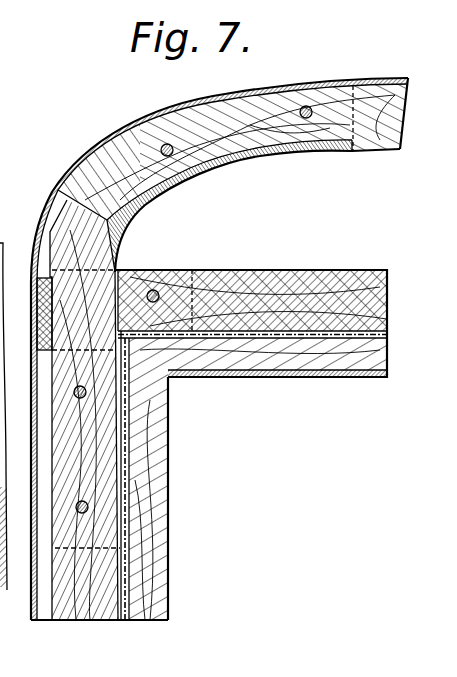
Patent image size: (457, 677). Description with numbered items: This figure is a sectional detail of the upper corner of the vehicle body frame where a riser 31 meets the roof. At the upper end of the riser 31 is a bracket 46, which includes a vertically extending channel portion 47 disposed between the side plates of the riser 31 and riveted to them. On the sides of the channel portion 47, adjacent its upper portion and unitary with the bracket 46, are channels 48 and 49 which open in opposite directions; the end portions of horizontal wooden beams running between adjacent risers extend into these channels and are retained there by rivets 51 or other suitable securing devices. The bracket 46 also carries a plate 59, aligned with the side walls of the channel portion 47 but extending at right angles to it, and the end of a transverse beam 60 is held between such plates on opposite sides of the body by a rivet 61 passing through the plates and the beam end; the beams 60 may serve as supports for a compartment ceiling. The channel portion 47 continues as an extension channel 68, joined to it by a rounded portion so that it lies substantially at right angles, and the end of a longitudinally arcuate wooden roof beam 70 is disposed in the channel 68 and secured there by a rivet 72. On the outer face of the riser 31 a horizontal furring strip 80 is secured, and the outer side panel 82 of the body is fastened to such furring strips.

The riser 31 is at (55, 380).
The bracket 46 is at (130, 233).
The vertically extending channel portion 47 is at (57, 553).
The channel 48 is at (78, 503).
The channel 49 is at (47, 260).
The rivet 51 is at (118, 270).
The plate 59 is at (203, 264).
The beam 60 is at (271, 270).
The rivet 61 is at (157, 291).
The channel 68 is at (346, 151).
The roof beam 70 is at (396, 150).
The rivet 72 is at (306, 106).
The furring strip 80 is at (52, 362).
The side panel 82 is at (31, 620).